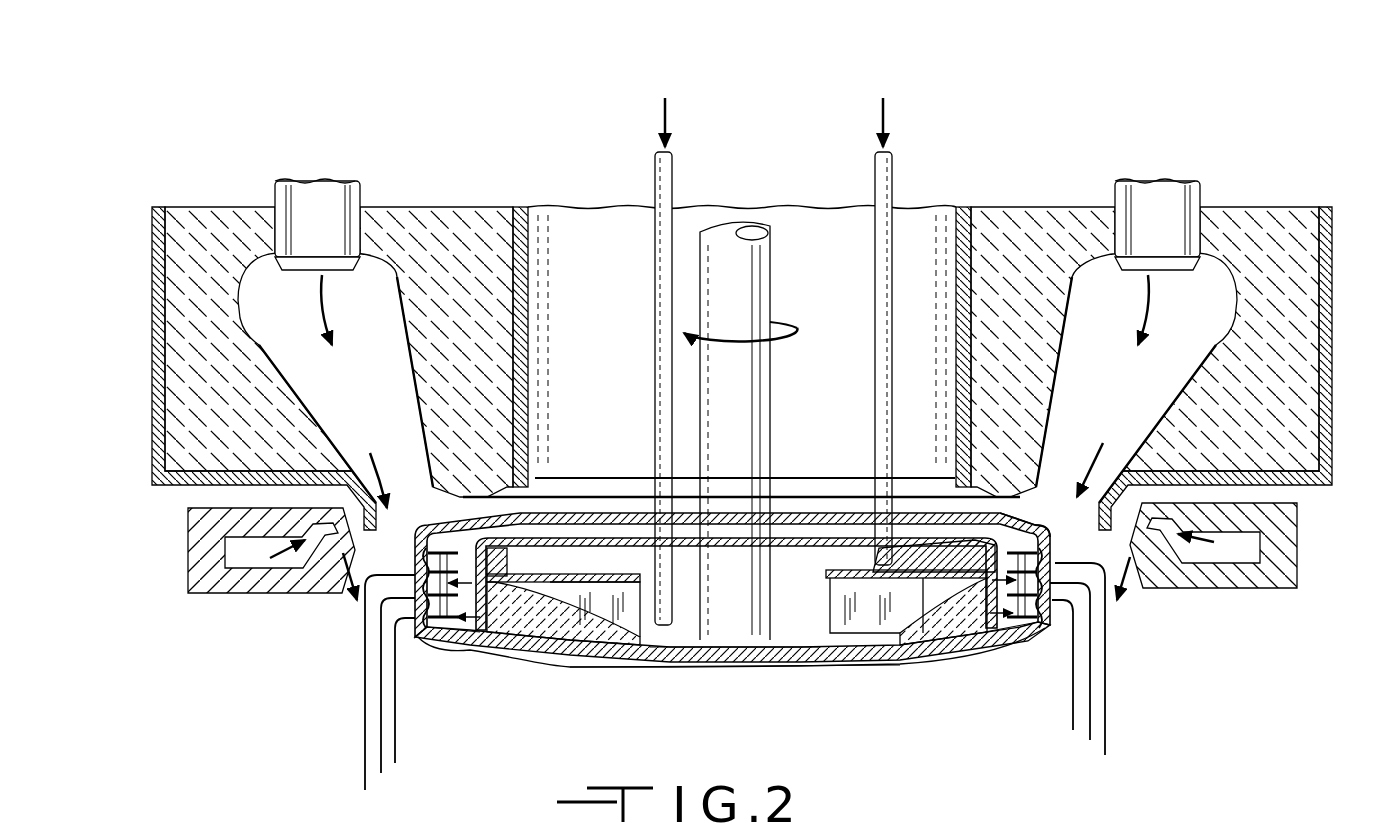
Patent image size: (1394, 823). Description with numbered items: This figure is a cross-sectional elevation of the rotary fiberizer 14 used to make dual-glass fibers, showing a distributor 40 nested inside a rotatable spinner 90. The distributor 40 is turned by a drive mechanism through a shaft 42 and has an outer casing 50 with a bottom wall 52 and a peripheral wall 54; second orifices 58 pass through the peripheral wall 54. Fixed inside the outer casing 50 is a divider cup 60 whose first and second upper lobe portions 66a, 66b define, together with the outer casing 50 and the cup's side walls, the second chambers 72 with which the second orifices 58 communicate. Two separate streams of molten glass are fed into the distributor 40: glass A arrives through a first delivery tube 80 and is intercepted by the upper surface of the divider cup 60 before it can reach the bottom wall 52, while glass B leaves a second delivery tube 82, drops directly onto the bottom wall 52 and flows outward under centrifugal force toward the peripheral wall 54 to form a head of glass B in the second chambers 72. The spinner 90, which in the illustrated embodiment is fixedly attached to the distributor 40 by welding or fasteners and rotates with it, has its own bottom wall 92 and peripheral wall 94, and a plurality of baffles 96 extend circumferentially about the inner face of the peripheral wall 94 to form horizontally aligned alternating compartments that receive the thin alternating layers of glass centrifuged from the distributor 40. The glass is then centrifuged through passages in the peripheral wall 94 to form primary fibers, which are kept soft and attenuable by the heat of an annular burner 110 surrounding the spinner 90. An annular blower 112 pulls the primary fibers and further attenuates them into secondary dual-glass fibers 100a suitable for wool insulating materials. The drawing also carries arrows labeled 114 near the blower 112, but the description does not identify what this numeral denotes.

The rotary fiberizer 14 is at (1222, 188).
The distributor 40 is at (601, 516).
The shaft 42 is at (752, 437).
The outer casing 50 is at (572, 658).
The bottom wall 52 is at (677, 662).
The peripheral wall 54 is at (1003, 545).
The second orifices 58 is at (473, 652).
The divider cup 60 is at (862, 620).
The first upper lobe portion 66a is at (915, 545).
The second upper lobe portion 66b is at (562, 560).
The second chambers 72 is at (572, 638).
The first delivery tube 80 is at (900, 172).
The second delivery tube 82 is at (677, 168).
The rotatable spinner 90 is at (700, 664).
The bottom wall 92 is at (777, 667).
The peripheral wall 94 is at (1052, 545).
The baffles 96 is at (423, 650).
The secondary dual-glass fibers 100a is at (1073, 718).
The annular burner 110 is at (336, 196).
The annular blower 112 is at (205, 570).
The flow path 114 is at (188, 496).